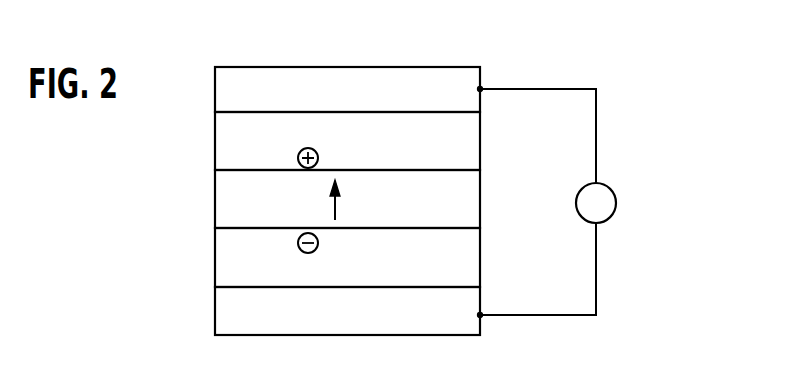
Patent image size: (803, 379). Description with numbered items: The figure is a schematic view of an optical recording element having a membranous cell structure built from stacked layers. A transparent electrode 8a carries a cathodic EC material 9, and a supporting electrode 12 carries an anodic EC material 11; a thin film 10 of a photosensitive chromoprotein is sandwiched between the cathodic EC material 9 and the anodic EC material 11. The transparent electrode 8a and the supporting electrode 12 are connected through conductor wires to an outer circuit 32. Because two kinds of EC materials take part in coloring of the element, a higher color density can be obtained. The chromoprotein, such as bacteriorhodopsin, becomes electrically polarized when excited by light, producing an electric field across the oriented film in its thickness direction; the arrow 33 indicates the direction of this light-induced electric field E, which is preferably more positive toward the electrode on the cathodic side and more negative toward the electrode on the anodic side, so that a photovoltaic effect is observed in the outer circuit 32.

The transparent electrode 8a is at (230, 95).
The cathodic EC material 9 is at (230, 143).
The thin film of photosensitive chromoprotein 10 is at (230, 202).
The anodic EC material 11 is at (230, 259).
The supporting electrode 12 is at (230, 313).
The arrow 33 is at (361, 200).
The outer circuit 32 is at (616, 203).